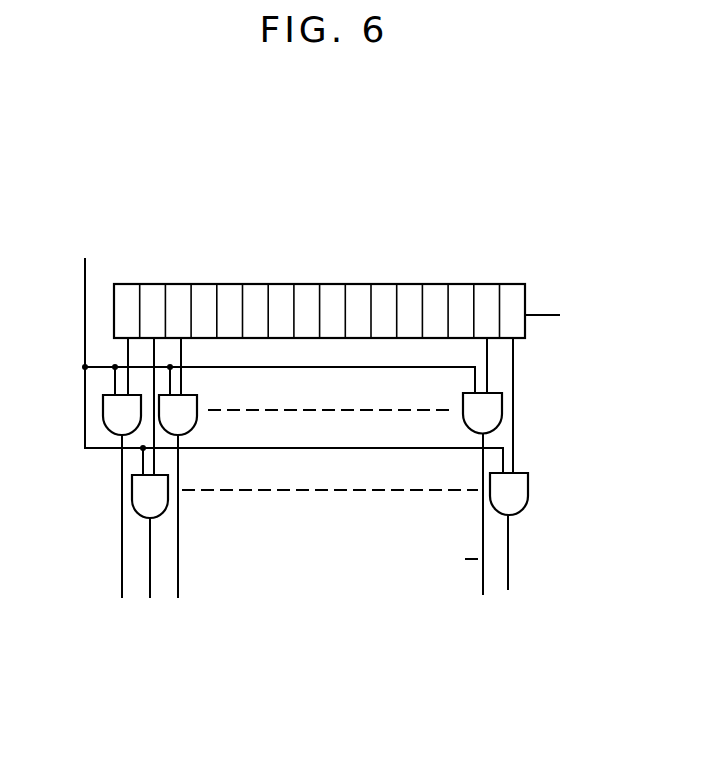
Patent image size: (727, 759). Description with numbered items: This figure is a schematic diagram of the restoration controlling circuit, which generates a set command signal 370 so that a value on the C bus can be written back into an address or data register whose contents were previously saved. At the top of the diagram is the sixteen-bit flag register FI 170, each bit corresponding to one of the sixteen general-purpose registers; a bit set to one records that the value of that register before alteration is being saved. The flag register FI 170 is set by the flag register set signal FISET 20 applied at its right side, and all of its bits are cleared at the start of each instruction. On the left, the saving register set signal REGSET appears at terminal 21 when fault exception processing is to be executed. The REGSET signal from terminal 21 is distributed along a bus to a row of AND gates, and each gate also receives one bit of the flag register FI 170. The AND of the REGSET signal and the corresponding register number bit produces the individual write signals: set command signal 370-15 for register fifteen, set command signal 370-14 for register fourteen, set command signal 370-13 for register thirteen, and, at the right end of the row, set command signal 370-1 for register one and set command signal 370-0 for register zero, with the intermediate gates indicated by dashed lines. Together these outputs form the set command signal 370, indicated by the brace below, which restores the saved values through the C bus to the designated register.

The terminal 21 is at (85, 311).
The flag register FI 170 is at (526, 293).
The flag register set signal FISET 20 is at (548, 318).
The set command signal for register fifteen 370-15 is at (122, 590).
The set command signal for register fourteen 370-14 is at (150, 585).
The set command signal for register thirteen 370-13 is at (182, 579).
The set command signal for register one 370-1 is at (484, 591).
The set command signal for register zero 370-0 is at (509, 585).
The set command signal 370 is at (115, 662).